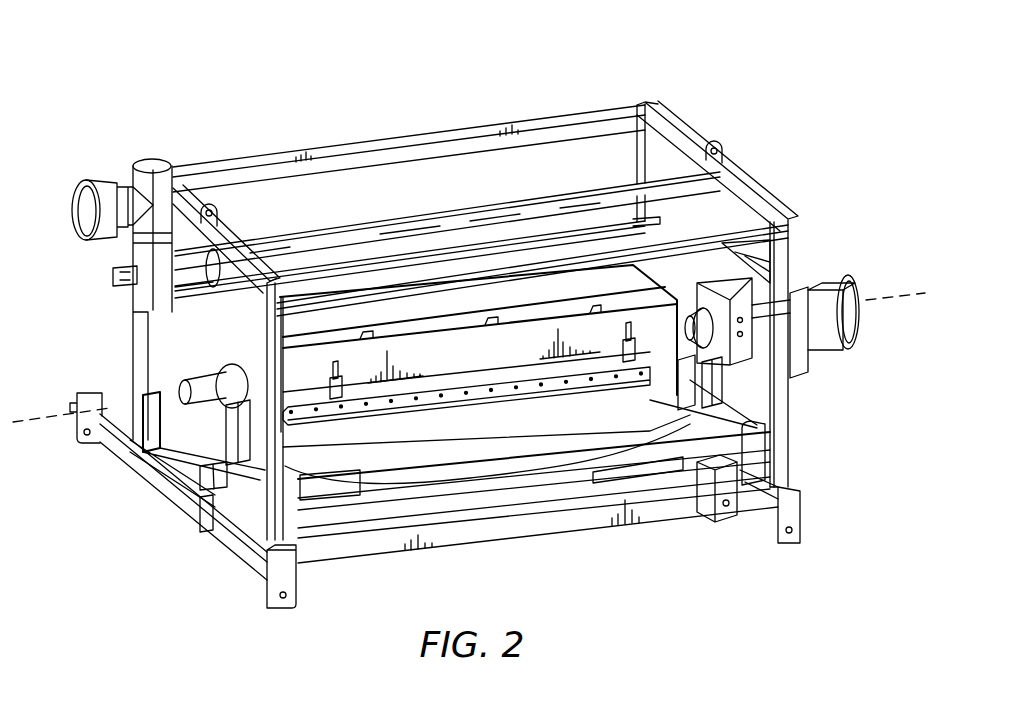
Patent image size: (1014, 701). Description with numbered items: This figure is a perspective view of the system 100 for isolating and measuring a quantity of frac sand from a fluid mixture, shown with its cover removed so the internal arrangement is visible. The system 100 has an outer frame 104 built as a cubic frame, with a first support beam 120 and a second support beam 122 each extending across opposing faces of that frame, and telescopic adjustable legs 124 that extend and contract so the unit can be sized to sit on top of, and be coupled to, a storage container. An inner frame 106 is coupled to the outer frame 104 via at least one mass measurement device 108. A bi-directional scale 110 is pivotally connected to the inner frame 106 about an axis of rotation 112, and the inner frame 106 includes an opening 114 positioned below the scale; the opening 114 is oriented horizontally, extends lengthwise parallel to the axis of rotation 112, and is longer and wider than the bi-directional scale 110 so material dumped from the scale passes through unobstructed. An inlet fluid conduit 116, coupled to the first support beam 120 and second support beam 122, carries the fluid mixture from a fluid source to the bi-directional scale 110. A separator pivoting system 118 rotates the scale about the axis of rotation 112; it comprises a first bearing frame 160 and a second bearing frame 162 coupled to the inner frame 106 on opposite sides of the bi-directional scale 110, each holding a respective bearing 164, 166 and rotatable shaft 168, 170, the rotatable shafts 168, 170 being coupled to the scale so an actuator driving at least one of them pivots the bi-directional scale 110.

The system 100 is at (688, 80).
The outer frame 104 is at (352, 160).
The inner frame 106 is at (735, 420).
The mass measurement device 108 is at (203, 497).
The bi-directional scale 110 is at (380, 425).
The axis of rotation 112 is at (50, 417).
The opening 114 is at (491, 444).
The inlet fluid conduit 116 is at (85, 180).
The separator pivoting system 118 is at (824, 263).
The first support beam 120 is at (236, 307).
The second support beam 122 is at (668, 180).
The telescopic adjustable legs 124 is at (95, 392).
The first bearing frame 160 is at (203, 485).
The bearing 164 is at (140, 438).
The second bearing frame 162 is at (692, 425).
The bearing 166 is at (700, 322).
The rotatable shaft 168 is at (193, 398).
The rotatable shaft 170 is at (745, 325).